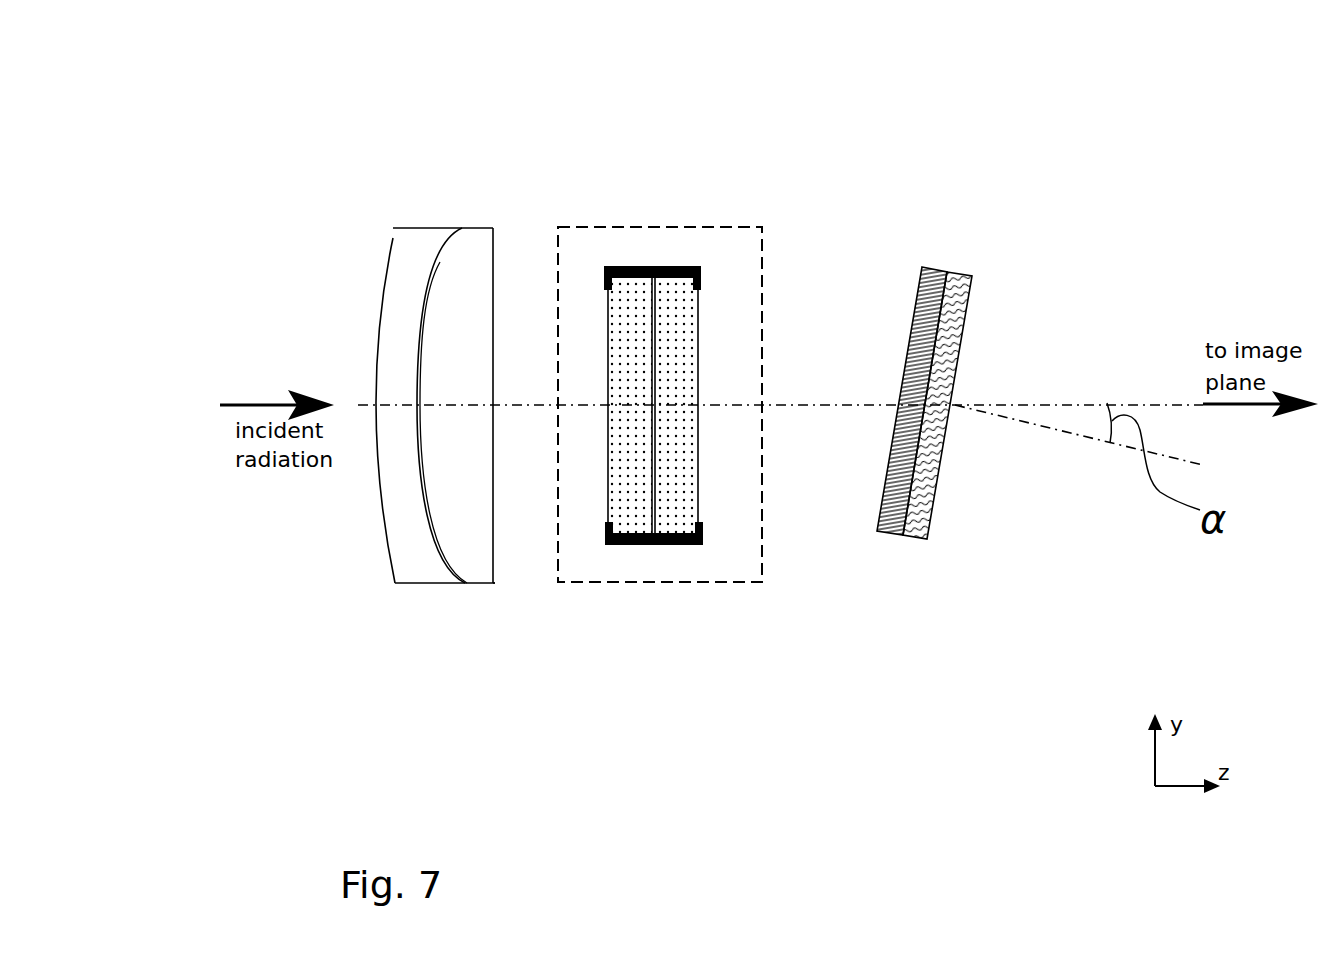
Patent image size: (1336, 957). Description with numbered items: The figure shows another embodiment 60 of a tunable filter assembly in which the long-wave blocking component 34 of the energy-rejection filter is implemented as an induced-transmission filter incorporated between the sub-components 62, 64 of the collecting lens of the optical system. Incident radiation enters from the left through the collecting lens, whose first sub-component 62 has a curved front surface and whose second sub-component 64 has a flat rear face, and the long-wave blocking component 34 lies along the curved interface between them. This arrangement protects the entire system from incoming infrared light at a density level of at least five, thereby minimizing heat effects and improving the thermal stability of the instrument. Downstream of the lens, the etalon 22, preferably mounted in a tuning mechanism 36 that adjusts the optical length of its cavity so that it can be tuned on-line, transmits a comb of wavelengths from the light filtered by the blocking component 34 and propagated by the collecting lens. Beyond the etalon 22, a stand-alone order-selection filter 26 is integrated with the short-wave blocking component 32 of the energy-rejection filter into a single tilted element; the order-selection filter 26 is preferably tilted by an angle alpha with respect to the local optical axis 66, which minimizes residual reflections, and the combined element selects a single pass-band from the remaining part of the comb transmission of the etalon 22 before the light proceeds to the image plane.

The tunable filter assembly embodiment 60 is at (693, 121).
The collecting lens sub-component 62 is at (405, 566).
The collecting lens sub-component 64 is at (474, 547).
The long-wave blocking component 34 is at (418, 353).
The tuning mechanism 36 is at (658, 583).
The etalon filter 22 is at (647, 520).
The order-selection filter 26 is at (920, 283).
The short-wave blocking component 32 is at (972, 283).
The local optical axis 66 is at (1053, 403).